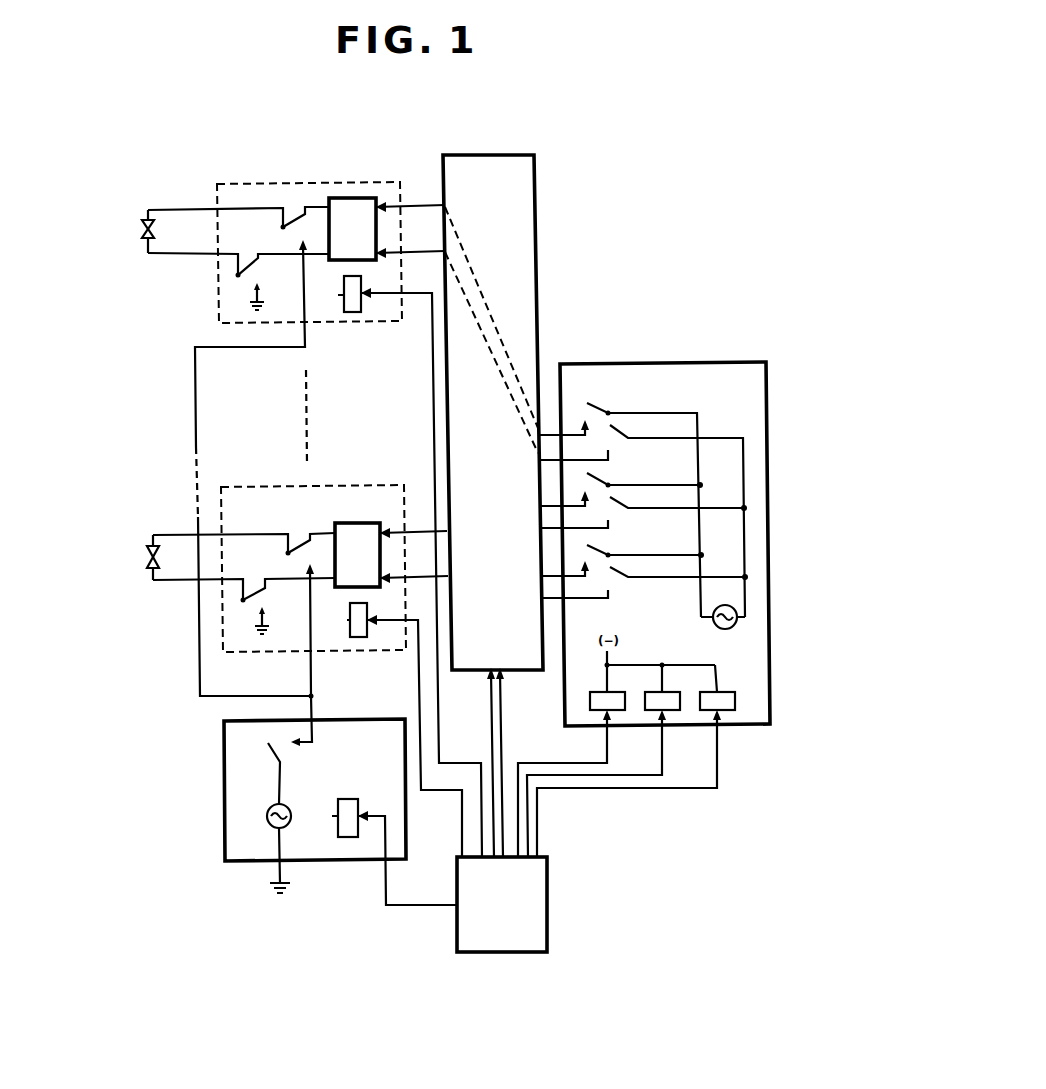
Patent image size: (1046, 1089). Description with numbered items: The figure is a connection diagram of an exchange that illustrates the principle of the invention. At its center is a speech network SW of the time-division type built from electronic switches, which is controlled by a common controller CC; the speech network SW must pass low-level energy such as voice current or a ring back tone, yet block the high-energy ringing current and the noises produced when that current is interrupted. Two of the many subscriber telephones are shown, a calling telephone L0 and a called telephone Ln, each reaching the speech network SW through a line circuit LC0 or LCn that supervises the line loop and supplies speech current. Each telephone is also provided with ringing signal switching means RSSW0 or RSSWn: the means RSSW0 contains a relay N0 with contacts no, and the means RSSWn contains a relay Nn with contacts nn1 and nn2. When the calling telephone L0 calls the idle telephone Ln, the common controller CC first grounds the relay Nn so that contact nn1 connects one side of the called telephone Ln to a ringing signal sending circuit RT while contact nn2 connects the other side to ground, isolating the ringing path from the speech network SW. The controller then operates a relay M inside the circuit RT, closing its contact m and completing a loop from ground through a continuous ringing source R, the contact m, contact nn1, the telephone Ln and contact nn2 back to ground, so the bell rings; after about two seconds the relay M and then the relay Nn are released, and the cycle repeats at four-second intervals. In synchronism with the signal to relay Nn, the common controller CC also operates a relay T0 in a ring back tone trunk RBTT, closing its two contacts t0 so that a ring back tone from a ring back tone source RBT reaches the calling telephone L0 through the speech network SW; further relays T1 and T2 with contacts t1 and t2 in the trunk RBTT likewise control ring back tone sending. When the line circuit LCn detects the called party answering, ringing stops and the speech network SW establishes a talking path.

The speech network SW is at (545, 221).
The ringing signal switching means RSSW0 is at (286, 180).
The ringing signal switching means RSSWn is at (178, 463).
The telephone L0 is at (162, 231).
The telephone Ln is at (167, 557).
The contact no is at (238, 258).
The contact nn1 is at (244, 548).
The contact nn2 is at (244, 606).
The line circuit LC0 is at (387, 229).
The line circuit LCn is at (391, 555).
The relay N0 is at (397, 565).
The relay Nn is at (392, 726).
The ringing signal sending circuit RT is at (224, 808).
The contact m is at (279, 762).
The ringing source R is at (269, 848).
The relay M is at (384, 838).
The common controller CC is at (560, 893).
The ring back tone trunk RBTT is at (787, 385).
The contact t0 is at (642, 508).
The contact t1 is at (643, 499).
The contact t2 is at (644, 573).
The ring back tone source RBT is at (722, 629).
The relay T0 is at (571, 760).
The relay T1 is at (655, 718).
The relay T2 is at (712, 718).